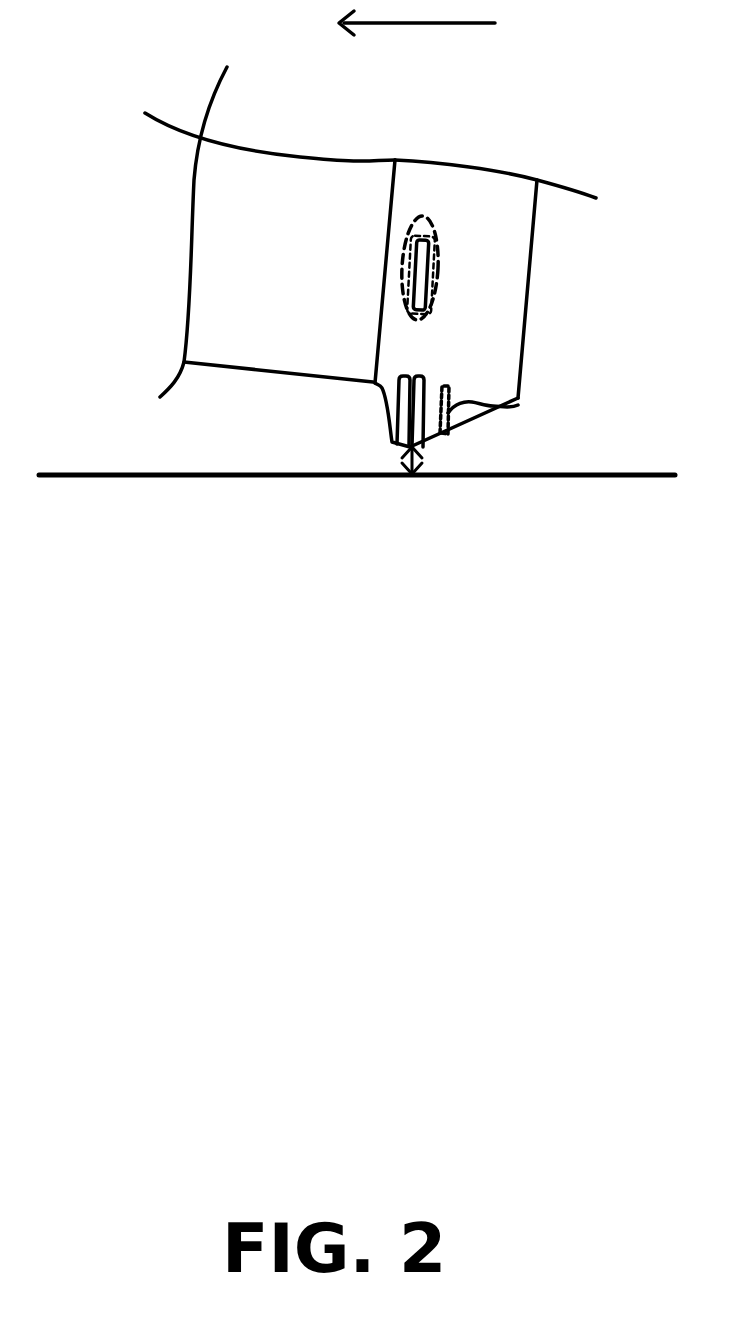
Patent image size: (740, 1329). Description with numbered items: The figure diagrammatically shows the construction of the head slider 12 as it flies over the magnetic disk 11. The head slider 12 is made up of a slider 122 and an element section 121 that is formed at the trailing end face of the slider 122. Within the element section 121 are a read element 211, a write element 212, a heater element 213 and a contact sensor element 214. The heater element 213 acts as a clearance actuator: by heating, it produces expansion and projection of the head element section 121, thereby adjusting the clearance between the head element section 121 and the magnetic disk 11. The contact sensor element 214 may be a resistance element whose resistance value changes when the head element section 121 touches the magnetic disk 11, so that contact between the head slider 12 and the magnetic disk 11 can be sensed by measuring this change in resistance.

The magnetic disk 11 is at (78, 472).
The head slider 12 is at (530, 146).
The element section 121 is at (485, 205).
The slider 122 is at (298, 267).
The read element 211 is at (398, 376).
The write element 212 is at (425, 377).
The heater element 213 is at (428, 258).
The contact sensor element 214 is at (518, 405).